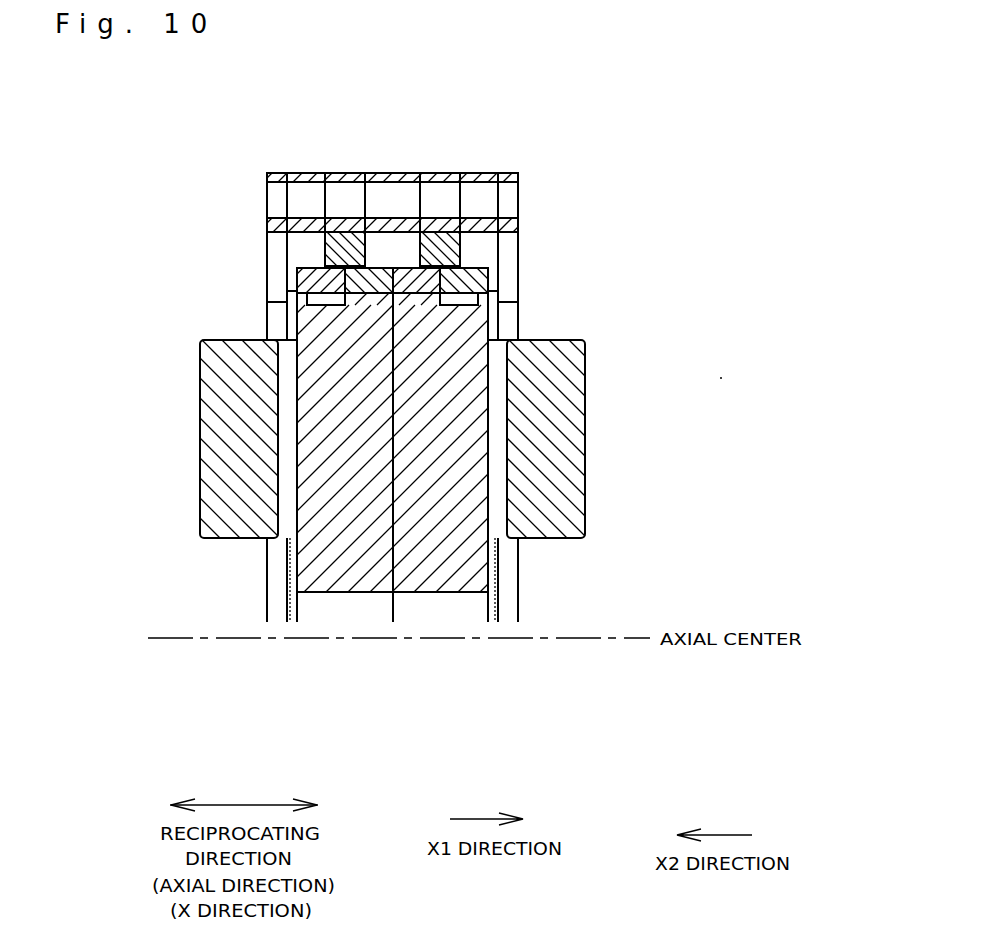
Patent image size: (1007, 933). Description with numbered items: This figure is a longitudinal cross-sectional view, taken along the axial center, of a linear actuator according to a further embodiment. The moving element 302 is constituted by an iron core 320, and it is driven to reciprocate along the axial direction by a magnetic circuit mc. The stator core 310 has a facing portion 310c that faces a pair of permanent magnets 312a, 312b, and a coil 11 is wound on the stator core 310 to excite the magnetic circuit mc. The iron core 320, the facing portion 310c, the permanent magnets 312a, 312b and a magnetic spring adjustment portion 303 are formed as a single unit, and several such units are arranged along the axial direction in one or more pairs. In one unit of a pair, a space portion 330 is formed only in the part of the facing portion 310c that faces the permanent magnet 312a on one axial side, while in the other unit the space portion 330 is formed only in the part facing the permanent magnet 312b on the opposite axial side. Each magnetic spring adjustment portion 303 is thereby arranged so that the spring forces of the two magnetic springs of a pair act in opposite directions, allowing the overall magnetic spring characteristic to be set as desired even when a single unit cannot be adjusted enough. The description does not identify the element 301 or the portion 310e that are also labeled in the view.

The moving element 302 is at (550, 157).
The magnetic spring adjustment portion 303 is at (215, 218).
The iron core 320 is at (338, 232).
The permanent magnet 312a is at (297, 270).
The permanent magnet 312b is at (376, 282).
The facing portion 310c is at (284, 292).
The gap portion 310e is at (306, 306).
The space portion 330 is at (337, 306).
The mover body 301 is at (642, 543).
The stator core 310 is at (291, 573).
The coil 11 is at (200, 420).
The magnetic circuit mc is at (725, 378).